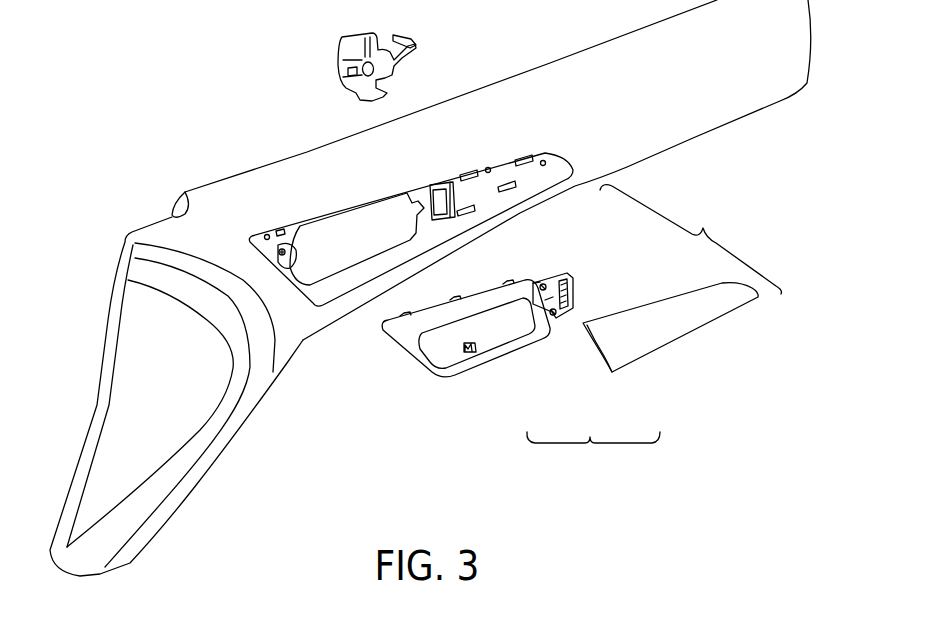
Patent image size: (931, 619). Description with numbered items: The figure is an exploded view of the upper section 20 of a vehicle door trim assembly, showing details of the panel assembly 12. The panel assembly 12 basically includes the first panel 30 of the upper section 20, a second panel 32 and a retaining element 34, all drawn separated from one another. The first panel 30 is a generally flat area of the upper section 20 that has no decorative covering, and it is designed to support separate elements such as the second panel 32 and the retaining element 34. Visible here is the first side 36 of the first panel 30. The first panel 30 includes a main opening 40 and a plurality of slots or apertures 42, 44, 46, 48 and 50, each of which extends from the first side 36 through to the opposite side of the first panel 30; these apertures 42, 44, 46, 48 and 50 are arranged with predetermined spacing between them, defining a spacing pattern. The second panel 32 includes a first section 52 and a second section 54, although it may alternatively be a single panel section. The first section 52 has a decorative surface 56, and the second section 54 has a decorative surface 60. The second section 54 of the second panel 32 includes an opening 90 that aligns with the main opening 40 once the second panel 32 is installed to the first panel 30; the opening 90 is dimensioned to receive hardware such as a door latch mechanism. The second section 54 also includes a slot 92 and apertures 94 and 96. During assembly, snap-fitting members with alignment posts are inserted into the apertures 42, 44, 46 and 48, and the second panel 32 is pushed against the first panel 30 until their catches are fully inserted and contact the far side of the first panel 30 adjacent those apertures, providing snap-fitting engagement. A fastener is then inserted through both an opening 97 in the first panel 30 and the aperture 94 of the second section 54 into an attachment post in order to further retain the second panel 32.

The panel assembly 12 is at (498, 170).
The upper section 20 is at (301, 364).
The first panel 30 is at (538, 176).
The second panel 32 is at (593, 453).
The retaining element 34 is at (330, 36).
The first side 36 is at (425, 228).
The main opening 40 is at (355, 270).
The aperture 42 is at (511, 191).
The aperture 44 is at (519, 158).
The aperture 46 is at (467, 215).
The aperture 48 is at (465, 172).
The aperture 50 is at (440, 183).
The first section 52 is at (632, 367).
The second section 54 is at (527, 345).
The decorative surface 56 is at (688, 313).
The decorative surface 60 is at (417, 358).
The opening 90 is at (462, 363).
The slot 92 is at (574, 293).
The aperture 94 is at (551, 282).
The aperture 96 is at (556, 315).
The opening 97 is at (549, 162).